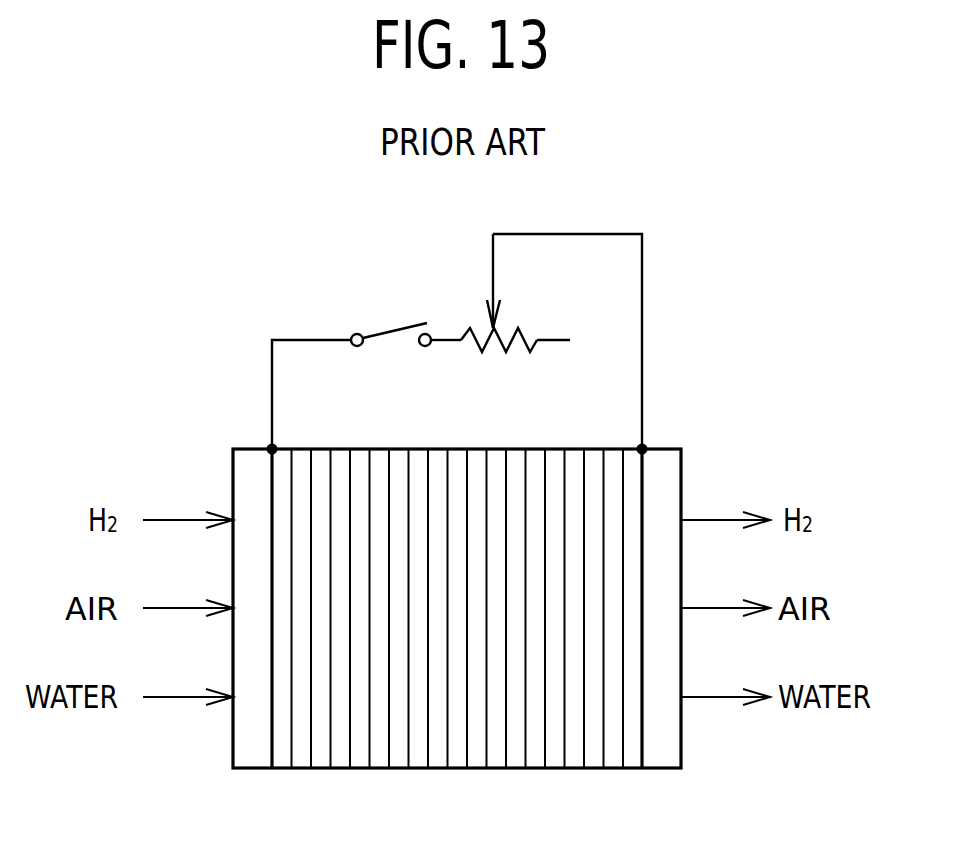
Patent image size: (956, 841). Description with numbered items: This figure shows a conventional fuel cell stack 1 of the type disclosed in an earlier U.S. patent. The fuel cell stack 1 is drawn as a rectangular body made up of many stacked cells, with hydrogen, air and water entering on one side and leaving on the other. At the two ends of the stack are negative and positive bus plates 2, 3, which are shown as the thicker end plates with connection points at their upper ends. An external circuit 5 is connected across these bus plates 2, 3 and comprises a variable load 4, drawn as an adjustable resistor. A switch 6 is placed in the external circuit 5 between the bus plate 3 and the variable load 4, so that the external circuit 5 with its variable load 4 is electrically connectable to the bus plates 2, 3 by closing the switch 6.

The fuel cell stack 1 is at (181, 271).
The negative bus plate 2 is at (644, 421).
The positive bus plate 3 is at (270, 418).
The variable load 4 is at (495, 355).
The external circuit 5 is at (653, 295).
The switch 6 is at (391, 322).